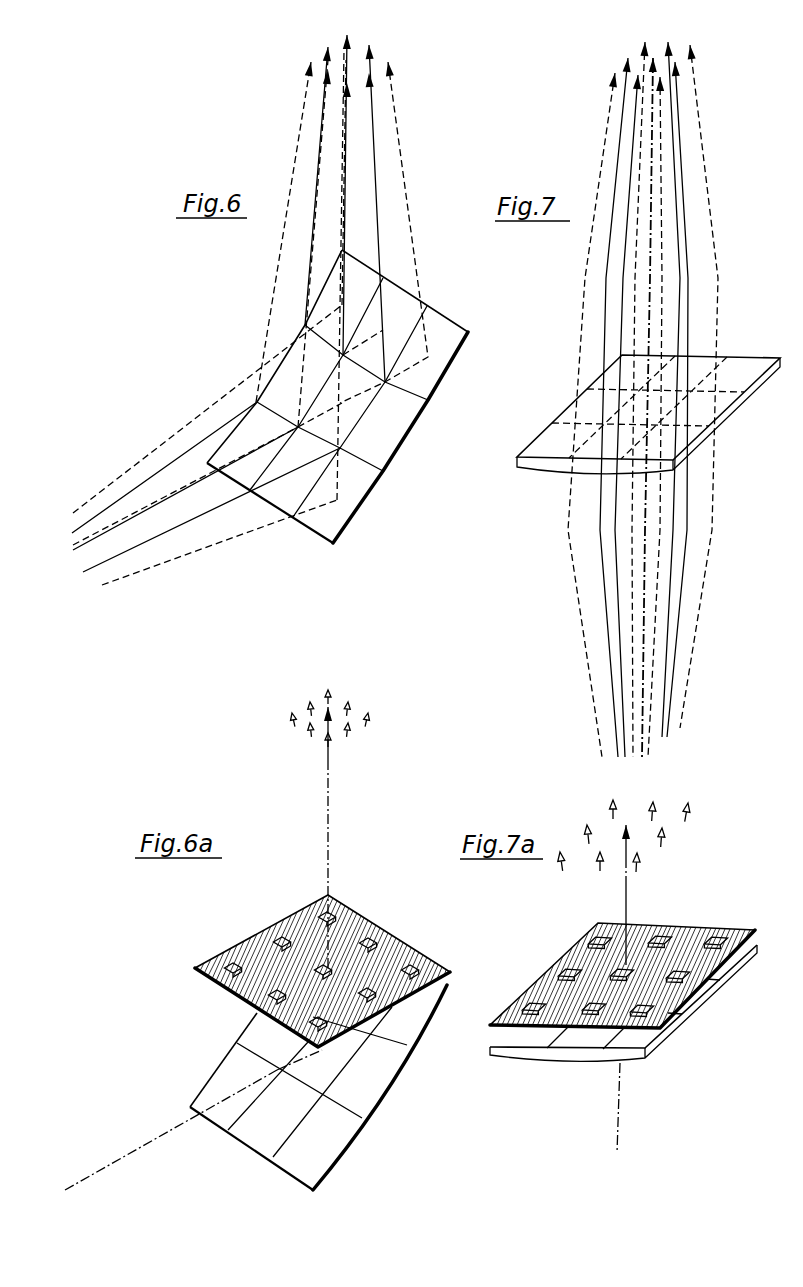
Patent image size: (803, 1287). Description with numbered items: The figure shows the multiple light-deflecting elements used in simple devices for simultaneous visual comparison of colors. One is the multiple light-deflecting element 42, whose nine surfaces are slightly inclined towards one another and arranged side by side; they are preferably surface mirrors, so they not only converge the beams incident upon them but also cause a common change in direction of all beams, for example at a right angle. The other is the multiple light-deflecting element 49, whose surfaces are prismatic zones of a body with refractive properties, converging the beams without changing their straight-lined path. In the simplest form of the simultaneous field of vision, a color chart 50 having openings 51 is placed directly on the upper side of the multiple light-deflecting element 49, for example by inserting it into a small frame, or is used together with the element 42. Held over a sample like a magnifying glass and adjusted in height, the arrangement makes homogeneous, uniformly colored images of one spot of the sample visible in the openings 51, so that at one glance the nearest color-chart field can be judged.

In FIG. 6, the multiple light-deflecting element with reflecting surfaces 42 is at (385, 477).
In FIG. 6A, the multiple light-deflecting element with reflecting surfaces 42 is at (360, 1137).
In FIG. 7, the multiple light-deflecting element with refractive surfaces 49 is at (520, 467).
In FIG. 7A, the multiple light-deflecting element with refractive surfaces 49 is at (498, 1052).
In FIG. 6A, the color chart 50 is at (205, 967).
In FIG. 7A, the color chart 50 is at (510, 1013).
In FIG. 6A, the openings 51 is at (235, 960).
In FIG. 7A, the openings 51 is at (558, 980).